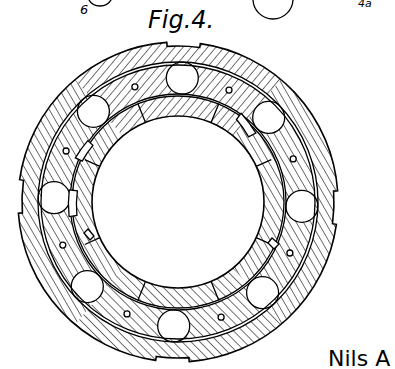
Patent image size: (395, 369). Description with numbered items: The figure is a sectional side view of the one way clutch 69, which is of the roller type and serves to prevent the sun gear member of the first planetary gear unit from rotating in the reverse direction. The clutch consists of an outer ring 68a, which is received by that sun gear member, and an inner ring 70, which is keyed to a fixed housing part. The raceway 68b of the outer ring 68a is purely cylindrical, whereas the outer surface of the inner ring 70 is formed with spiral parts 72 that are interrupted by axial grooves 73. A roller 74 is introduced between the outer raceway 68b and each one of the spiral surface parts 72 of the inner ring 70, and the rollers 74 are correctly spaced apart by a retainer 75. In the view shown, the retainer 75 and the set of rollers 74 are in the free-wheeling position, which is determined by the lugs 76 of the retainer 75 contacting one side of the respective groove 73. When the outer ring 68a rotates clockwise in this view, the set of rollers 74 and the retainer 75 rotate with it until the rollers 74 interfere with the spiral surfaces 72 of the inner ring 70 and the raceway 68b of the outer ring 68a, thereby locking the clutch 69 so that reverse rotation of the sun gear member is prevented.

The outer ring 68a is at (92, 74).
The raceway 68b is at (238, 78).
The one way clutch 69 is at (331, 140).
The inner ring 70 is at (112, 130).
The spiral parts 72 is at (122, 107).
The axial grooves 73 is at (178, 120).
The roller 74 is at (82, 105).
The retainer 75 is at (305, 178).
The lugs 76 is at (87, 234).